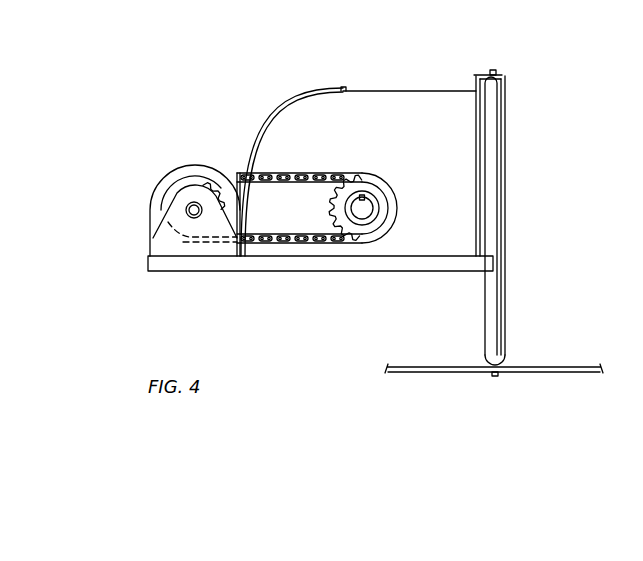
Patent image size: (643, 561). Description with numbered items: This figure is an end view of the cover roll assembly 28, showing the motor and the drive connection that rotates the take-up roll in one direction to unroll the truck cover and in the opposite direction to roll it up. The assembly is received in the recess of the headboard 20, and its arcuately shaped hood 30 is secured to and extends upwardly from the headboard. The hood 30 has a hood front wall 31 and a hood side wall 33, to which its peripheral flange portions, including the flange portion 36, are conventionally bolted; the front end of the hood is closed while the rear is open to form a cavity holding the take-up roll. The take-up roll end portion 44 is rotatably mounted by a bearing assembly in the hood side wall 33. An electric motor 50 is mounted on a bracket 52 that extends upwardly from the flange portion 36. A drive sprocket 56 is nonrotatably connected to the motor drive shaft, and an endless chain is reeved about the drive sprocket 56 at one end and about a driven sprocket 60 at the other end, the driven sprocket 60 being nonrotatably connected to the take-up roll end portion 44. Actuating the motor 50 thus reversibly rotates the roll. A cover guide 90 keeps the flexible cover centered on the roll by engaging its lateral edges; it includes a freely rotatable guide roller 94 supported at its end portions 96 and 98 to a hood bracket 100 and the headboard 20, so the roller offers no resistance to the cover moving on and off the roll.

The headboard 20 is at (462, 373).
The cover roll assembly 28 is at (336, 63).
The hood 30 is at (387, 90).
The hood front wall 31 is at (273, 118).
The hood side wall 33 is at (394, 141).
The flange portion 36 is at (313, 263).
The take-up roll end portion 44 is at (363, 207).
The electric motor 50 is at (170, 173).
The bracket 52 is at (172, 235).
The drive sprocket 56 is at (198, 188).
The driven sprocket 60 is at (330, 216).
The cover guide 90 is at (514, 117).
The guide roller 94 is at (505, 150).
The end portion 96 is at (505, 83).
The end portion 98 is at (507, 352).
The hood bracket 100 is at (478, 73).